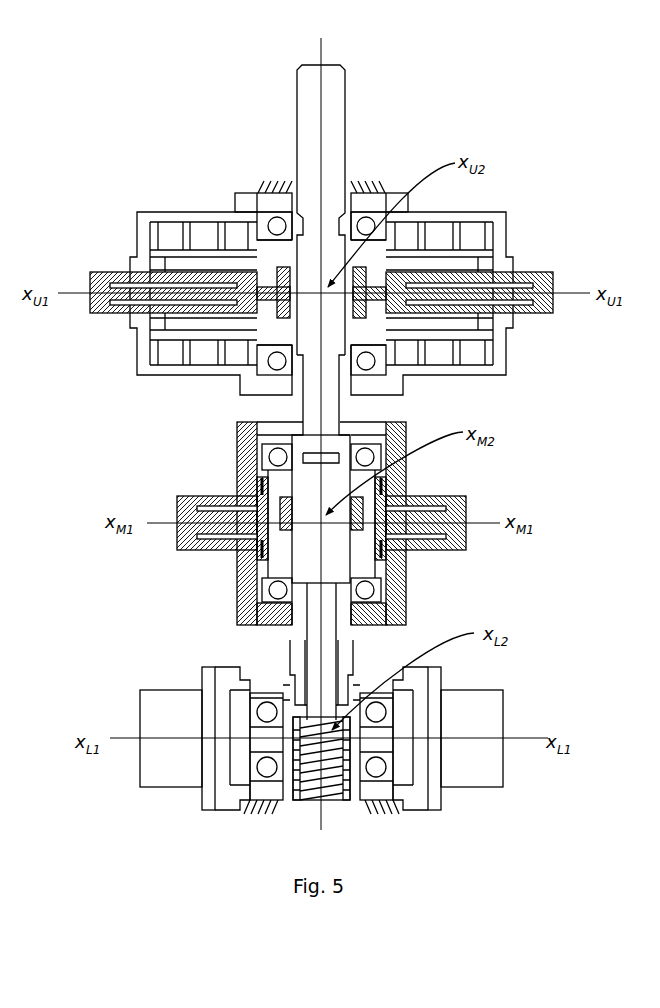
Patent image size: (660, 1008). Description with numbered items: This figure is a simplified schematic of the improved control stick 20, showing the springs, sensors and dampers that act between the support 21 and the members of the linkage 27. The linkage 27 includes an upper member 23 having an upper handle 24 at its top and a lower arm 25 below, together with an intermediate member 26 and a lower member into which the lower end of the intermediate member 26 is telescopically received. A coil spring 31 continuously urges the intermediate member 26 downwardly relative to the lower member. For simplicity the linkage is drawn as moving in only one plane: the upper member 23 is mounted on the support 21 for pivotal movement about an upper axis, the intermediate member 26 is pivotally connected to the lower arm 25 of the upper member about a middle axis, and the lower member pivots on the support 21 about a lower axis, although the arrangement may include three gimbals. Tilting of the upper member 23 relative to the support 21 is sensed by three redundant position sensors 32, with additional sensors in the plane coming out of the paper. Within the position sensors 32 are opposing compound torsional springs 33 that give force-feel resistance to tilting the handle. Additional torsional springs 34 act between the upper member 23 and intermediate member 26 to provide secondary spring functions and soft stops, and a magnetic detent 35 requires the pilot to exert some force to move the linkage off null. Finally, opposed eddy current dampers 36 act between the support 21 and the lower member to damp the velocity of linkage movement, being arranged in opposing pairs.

The control stick 20 is at (432, 124).
The support 21 is at (368, 179).
The upper member 23 is at (290, 176).
The upper handle 24 is at (294, 126).
The lower arm 25 is at (345, 411).
The intermediate member 26 is at (306, 627).
The linkage 27 is at (233, 176).
The coil spring 31 is at (297, 801).
The position sensors 32 is at (233, 360).
The compound torsional springs 33 is at (99, 270).
The torsional springs 34 is at (182, 557).
The magnetic detent 35 is at (251, 489).
The eddy current dampers 36 is at (136, 702).